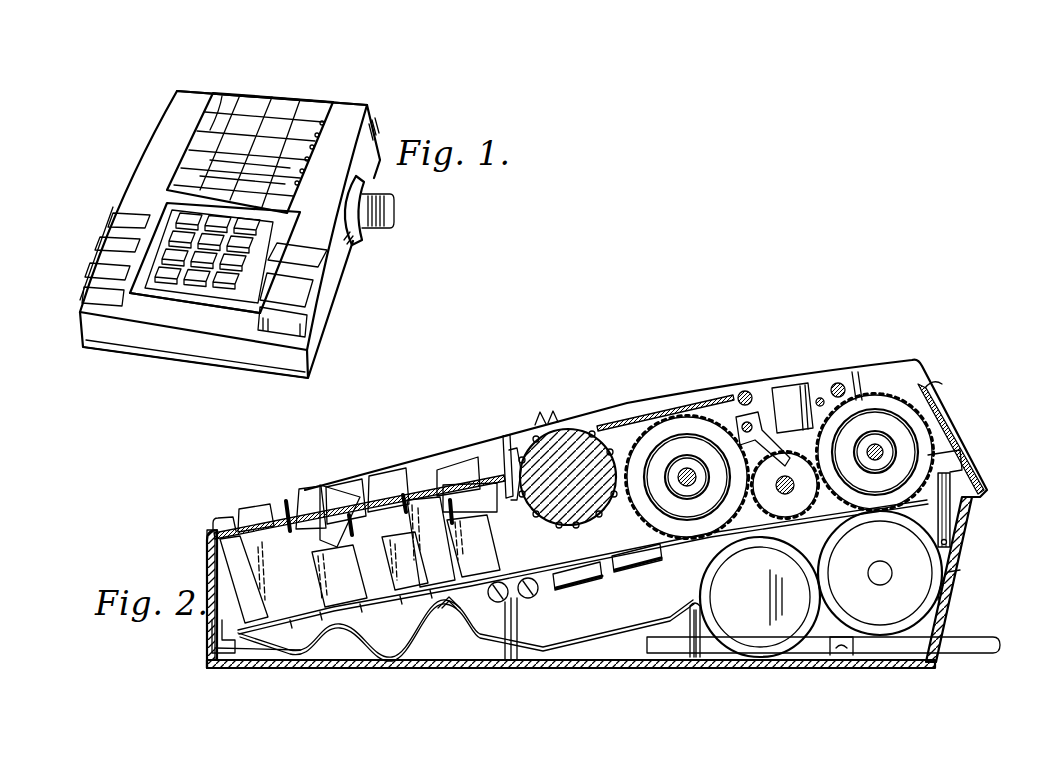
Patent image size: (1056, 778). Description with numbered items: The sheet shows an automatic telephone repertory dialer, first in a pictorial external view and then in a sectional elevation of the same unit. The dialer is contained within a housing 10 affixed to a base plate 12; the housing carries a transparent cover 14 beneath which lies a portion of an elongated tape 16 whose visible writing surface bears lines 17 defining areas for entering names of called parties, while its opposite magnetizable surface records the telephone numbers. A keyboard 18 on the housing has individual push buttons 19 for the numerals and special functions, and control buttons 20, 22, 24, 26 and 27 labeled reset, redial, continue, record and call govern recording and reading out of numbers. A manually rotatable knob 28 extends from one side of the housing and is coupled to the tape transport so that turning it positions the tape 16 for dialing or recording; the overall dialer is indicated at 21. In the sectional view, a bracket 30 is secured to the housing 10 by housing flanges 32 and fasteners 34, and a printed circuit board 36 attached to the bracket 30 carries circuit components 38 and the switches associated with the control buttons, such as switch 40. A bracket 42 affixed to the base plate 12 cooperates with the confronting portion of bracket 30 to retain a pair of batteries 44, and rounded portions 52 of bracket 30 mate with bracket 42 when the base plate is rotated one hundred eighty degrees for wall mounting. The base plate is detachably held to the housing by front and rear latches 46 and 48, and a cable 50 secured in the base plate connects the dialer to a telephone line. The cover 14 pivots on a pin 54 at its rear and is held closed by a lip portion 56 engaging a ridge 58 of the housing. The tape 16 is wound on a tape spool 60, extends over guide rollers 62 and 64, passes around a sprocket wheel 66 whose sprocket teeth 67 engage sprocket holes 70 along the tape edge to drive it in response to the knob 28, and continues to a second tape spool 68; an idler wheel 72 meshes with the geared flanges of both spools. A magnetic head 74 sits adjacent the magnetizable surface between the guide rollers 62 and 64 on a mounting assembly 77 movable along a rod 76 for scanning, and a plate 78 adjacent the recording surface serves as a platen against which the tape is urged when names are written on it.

In FIG. 1, the housing 10 is at (373, 140).
In FIG. 1, the base plate 12 is at (302, 376).
In FIG. 2, the base plate 12 is at (388, 664).
In FIG. 1, the transparent cover 14 is at (308, 97).
In FIG. 2, the transparent cover 14 is at (822, 368).
In FIG. 1, the elongated tape 16 is at (232, 100).
In FIG. 2, the elongated tape 16 is at (850, 386).
In FIG. 1, the lines 17 is at (180, 166).
In FIG. 1, the keyboard 18 is at (132, 297).
In FIG. 1, the push button 19 is at (233, 142).
In FIG. 2, the push button 19 is at (248, 504).
In FIG. 1, the reset control button 20 is at (110, 216).
In FIG. 2, the reset control button 20 is at (414, 456).
In FIG. 1, the dialer device 21 is at (123, 152).
In FIG. 1, the redial control button 22 is at (103, 243).
In FIG. 2, the redial control button 22 is at (304, 488).
In FIG. 1, the continue control button 24 is at (93, 270).
In FIG. 2, the continue control button 24 is at (222, 519).
In FIG. 1, the record control button 26 is at (330, 257).
In FIG. 2, the record control button 26 is at (331, 487).
In FIG. 1, the call control button 27 is at (310, 280).
In FIG. 2, the call control button 27 is at (264, 500).
In FIG. 1, the manually rotatable knob 28 is at (396, 207).
In FIG. 2, the bracket 30 is at (295, 650).
In FIG. 2, the housing flanges 32 is at (268, 591).
In FIG. 2, the fasteners 34 is at (449, 606).
In FIG. 2, the printed circuit board 36 is at (521, 573).
In FIG. 2, the circuit components 38 is at (638, 566).
In FIG. 2, the switch 40 is at (349, 586).
In FIG. 2, the bracket 42 is at (790, 666).
In FIG. 2, the batteries 44 is at (852, 572).
In FIG. 2, the front latch 46 is at (212, 640).
In FIG. 2, the rear latch 48 is at (975, 462).
In FIG. 2, the cable 50 is at (963, 656).
In FIG. 2, the rounded portions 52 is at (358, 642).
In FIG. 2, the pin 54 is at (932, 392).
In FIG. 2, the lip portion 56 is at (512, 452).
In FIG. 2, the ridge 58 is at (504, 446).
In FIG. 2, the tape spool 60 is at (926, 455).
In FIG. 2, the guide roller 62 is at (845, 386).
In FIG. 2, the guide roller 64 is at (747, 391).
In FIG. 2, the sprocket wheel 66 is at (568, 432).
In FIG. 2, the sprocket teeth 67 is at (550, 420).
In FIG. 2, the second tape spool 68 is at (700, 425).
In FIG. 1, the sprocket holes 70 is at (327, 112).
In FIG. 2, the idler wheel 72 is at (799, 504).
In FIG. 2, the magnetic head 74 is at (794, 390).
In FIG. 2, the rod 76 is at (741, 423).
In FIG. 2, the mounting assembly 77 is at (785, 485).
In FIG. 2, the plate 78 is at (640, 413).